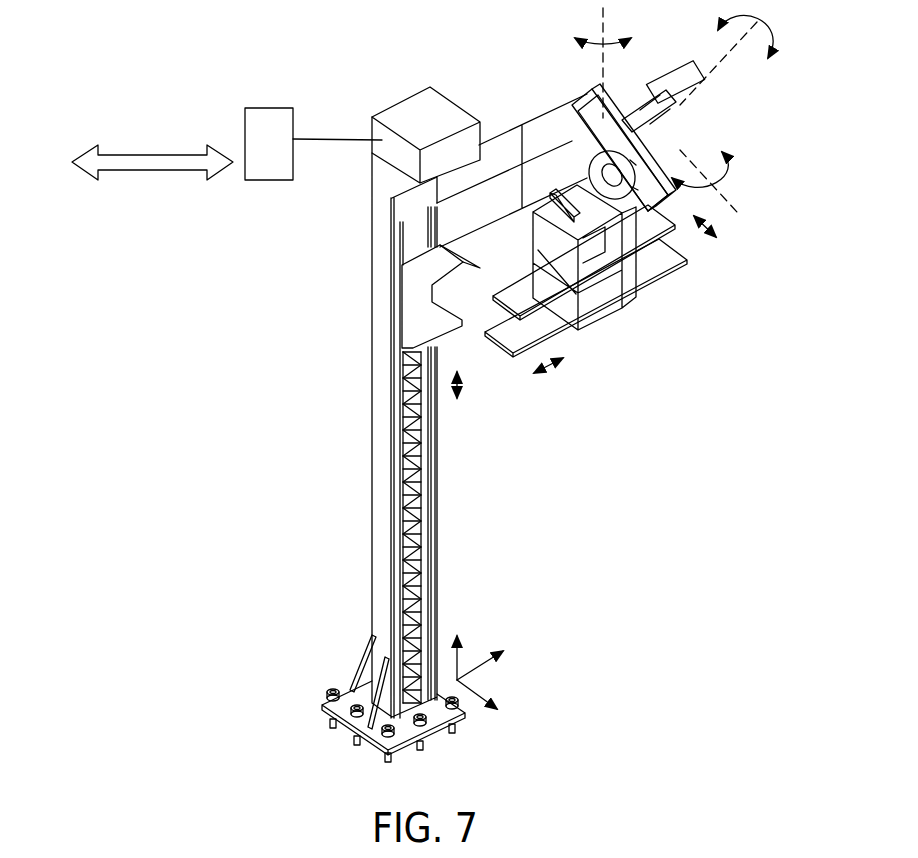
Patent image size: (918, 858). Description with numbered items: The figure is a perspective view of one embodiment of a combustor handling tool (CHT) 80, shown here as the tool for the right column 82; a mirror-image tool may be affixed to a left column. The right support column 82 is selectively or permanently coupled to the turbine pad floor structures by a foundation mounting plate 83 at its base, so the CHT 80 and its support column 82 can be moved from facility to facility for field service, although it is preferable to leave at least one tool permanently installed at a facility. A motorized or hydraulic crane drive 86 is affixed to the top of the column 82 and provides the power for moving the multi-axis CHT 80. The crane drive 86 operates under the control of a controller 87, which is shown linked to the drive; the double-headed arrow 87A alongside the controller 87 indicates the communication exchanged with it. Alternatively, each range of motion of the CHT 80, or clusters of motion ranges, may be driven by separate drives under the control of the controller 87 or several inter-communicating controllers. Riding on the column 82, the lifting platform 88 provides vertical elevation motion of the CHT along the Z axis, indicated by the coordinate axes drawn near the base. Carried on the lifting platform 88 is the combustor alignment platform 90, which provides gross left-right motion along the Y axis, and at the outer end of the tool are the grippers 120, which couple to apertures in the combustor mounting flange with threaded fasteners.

The combustor handling tool 80 is at (208, 517).
The right support column 82 is at (370, 467).
The foundation mounting plate 83 is at (350, 690).
The crane drive 86 is at (370, 130).
The controller 87 is at (260, 137).
The communication link 87A is at (83, 165).
The lifting platform 88 is at (407, 306).
The combustor alignment platform 90 is at (633, 344).
The grippers 120 is at (697, 103).